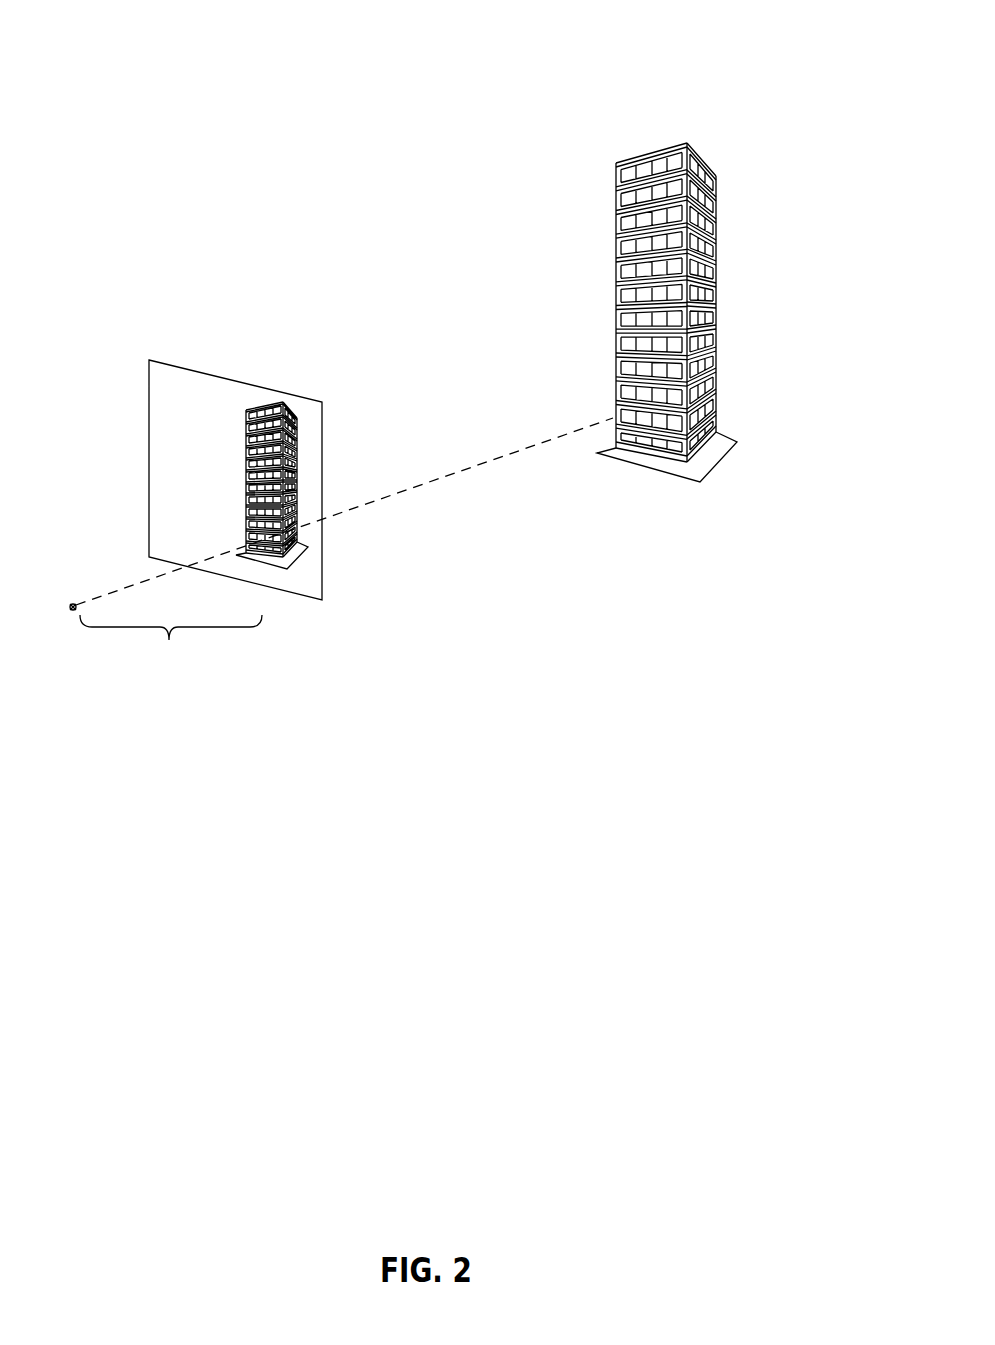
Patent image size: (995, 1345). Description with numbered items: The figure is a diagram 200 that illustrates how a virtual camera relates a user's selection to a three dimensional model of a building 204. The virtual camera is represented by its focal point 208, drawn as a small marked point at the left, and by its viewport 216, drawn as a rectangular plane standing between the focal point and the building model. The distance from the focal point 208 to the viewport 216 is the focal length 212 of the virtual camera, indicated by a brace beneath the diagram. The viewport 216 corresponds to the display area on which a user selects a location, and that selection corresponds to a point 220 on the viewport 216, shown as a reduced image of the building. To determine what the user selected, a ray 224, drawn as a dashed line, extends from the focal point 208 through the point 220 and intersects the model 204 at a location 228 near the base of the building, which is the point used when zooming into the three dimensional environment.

The diagram 200 is at (776, 94).
The three dimensional model of a building 204 is at (617, 162).
The focal point 208 is at (70, 610).
The focal length 212 is at (171, 650).
The viewport 216 is at (241, 380).
The point 220 is at (268, 578).
The ray 224 is at (508, 458).
The location 228 is at (650, 458).